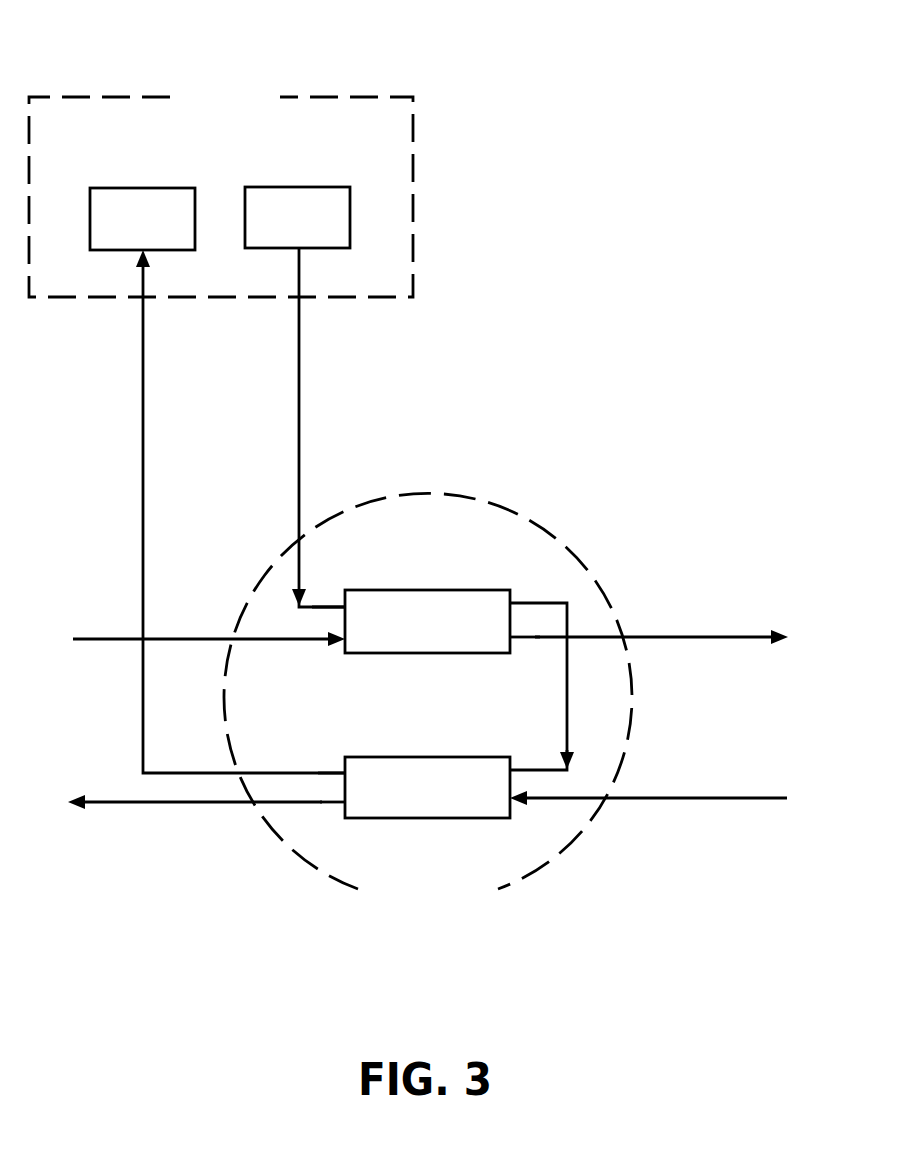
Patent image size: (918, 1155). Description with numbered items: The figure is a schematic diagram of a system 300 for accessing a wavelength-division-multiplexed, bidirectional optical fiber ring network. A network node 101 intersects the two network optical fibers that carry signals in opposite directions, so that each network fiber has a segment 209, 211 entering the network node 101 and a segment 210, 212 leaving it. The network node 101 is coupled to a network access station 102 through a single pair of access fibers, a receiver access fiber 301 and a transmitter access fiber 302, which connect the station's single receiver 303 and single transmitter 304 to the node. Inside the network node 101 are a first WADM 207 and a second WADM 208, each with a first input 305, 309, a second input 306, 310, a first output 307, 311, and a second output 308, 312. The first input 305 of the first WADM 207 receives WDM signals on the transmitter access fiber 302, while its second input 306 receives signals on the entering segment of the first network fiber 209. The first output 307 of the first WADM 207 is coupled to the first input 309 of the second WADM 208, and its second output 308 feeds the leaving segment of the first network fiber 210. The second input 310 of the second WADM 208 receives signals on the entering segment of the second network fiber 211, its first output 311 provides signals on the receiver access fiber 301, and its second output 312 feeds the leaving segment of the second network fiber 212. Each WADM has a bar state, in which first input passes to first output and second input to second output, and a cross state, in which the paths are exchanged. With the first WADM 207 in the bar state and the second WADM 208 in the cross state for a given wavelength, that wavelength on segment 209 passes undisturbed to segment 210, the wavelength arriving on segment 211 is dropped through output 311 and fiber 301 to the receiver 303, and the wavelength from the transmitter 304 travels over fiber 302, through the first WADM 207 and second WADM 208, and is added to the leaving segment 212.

The network access station 102 is at (120, 95).
The receiver 303 is at (143, 187).
The transmitter 304 is at (303, 187).
The receiver access fiber 301 is at (143, 372).
The transmitter access fiber 302 is at (299, 370).
The system 300 is at (532, 434).
The network node 101 is at (603, 815).
The first WADM 207 is at (392, 653).
The second WADM 208 is at (412, 755).
The segment of the first network optical fiber entering the network node 209 is at (107, 637).
The segment of the first network optical fiber leaving the network node 210 is at (695, 633).
The segment of the second network optical fiber entering the network node 211 is at (700, 797).
The segment of the second network optical fiber leaving the network node 212 is at (122, 807).
The first input of the first WADM 305 is at (315, 603).
The second input of the first WADM 306 is at (343, 645).
The first output of the first WADM 307 is at (525, 603).
The second output of the first WADM 308 is at (515, 643).
The first input of the second WADM 309 is at (520, 768).
The second input of the second WADM 310 is at (513, 807).
The first output of the second WADM 311 is at (322, 768).
The second output of the second WADM 312 is at (342, 800).